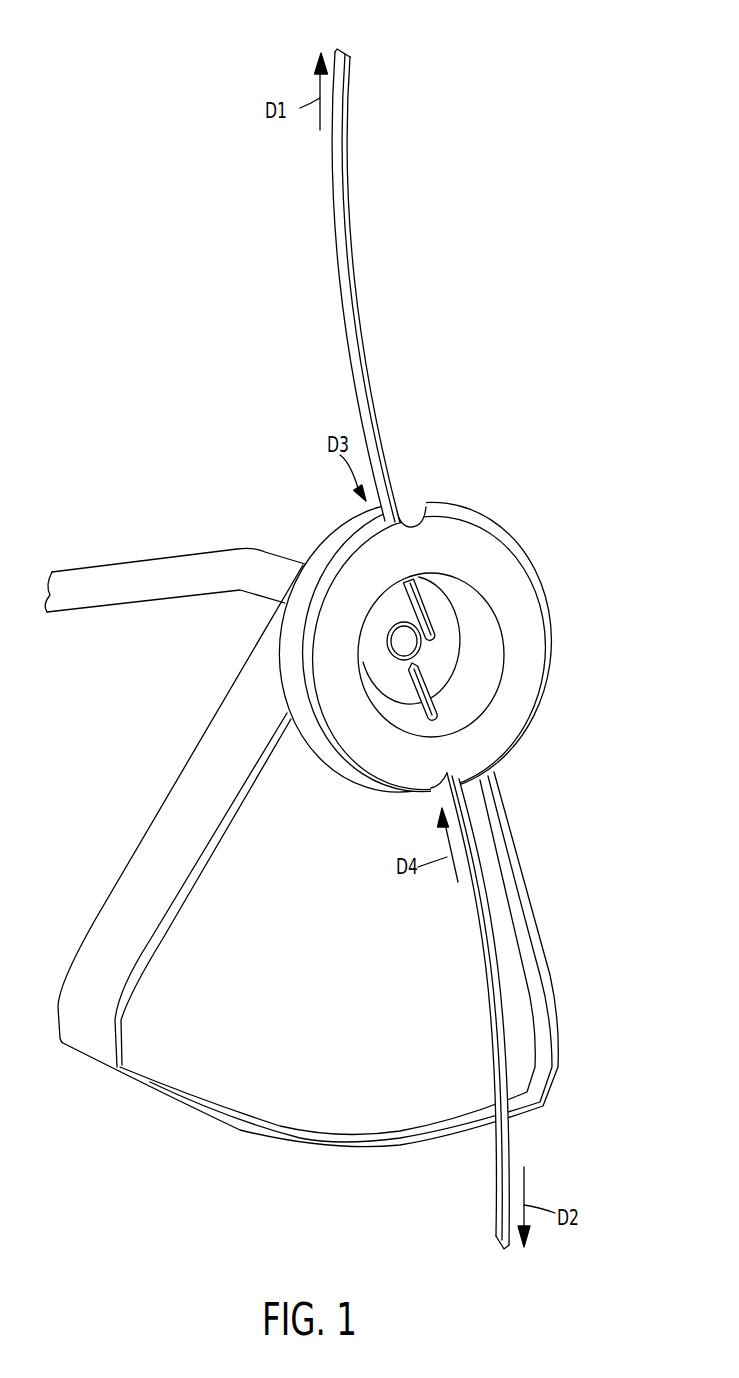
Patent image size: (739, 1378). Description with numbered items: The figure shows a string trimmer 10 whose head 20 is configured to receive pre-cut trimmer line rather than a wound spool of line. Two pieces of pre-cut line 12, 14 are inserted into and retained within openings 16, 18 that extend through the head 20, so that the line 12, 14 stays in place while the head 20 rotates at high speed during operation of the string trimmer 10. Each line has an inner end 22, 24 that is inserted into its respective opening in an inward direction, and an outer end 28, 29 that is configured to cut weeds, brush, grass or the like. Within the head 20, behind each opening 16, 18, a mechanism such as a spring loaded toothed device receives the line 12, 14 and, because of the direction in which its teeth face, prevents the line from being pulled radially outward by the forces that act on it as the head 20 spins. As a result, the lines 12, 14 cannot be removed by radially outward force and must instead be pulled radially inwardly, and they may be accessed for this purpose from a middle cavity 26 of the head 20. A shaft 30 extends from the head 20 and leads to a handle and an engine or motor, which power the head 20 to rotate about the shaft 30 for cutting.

The string trimmer 10 is at (277, 535).
The pre-cut line 12 is at (348, 284).
The pre-cut line 14 is at (472, 848).
The opening 16 is at (411, 520).
The opening 18 is at (437, 710).
The head 20 is at (362, 587).
The end 22 is at (417, 607).
The end 24 is at (421, 682).
The middle cavity 26 is at (383, 687).
The end 28 is at (348, 55).
The end 29 is at (496, 1246).
The shaft 30 is at (148, 570).